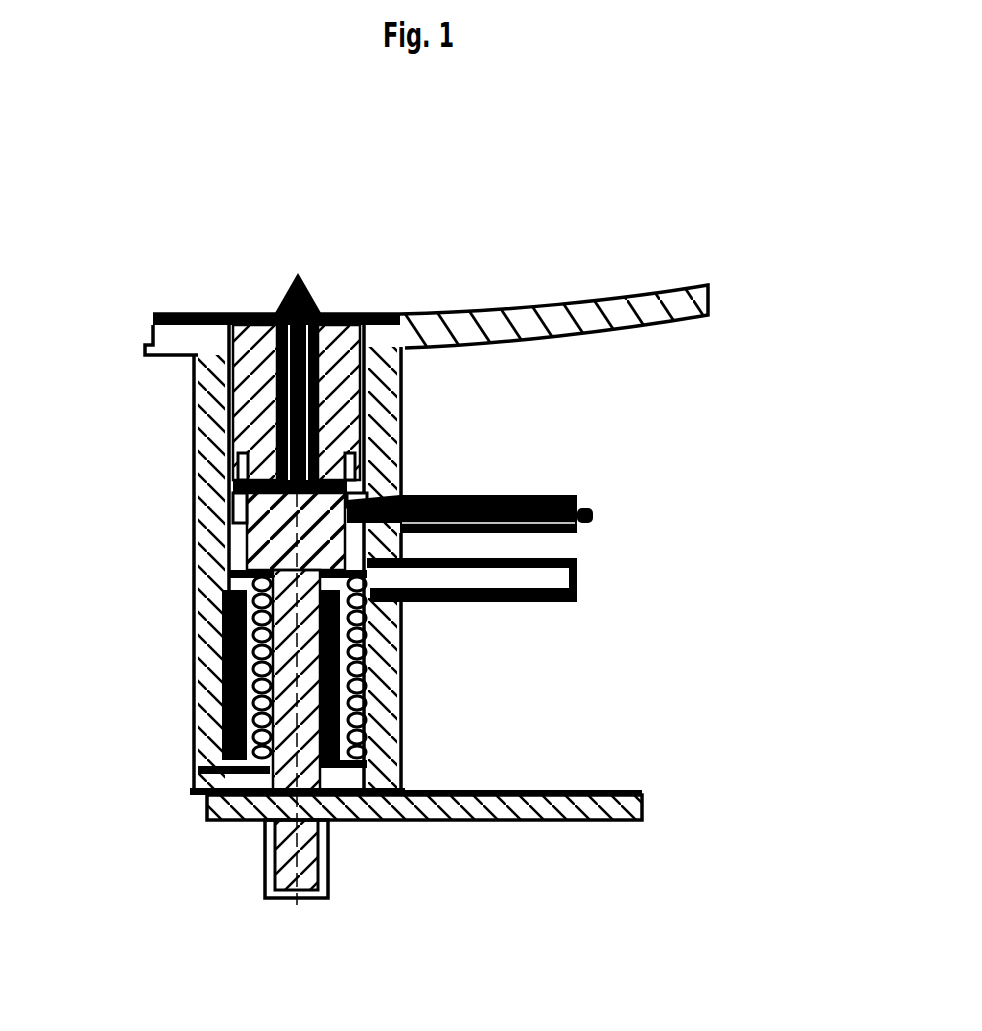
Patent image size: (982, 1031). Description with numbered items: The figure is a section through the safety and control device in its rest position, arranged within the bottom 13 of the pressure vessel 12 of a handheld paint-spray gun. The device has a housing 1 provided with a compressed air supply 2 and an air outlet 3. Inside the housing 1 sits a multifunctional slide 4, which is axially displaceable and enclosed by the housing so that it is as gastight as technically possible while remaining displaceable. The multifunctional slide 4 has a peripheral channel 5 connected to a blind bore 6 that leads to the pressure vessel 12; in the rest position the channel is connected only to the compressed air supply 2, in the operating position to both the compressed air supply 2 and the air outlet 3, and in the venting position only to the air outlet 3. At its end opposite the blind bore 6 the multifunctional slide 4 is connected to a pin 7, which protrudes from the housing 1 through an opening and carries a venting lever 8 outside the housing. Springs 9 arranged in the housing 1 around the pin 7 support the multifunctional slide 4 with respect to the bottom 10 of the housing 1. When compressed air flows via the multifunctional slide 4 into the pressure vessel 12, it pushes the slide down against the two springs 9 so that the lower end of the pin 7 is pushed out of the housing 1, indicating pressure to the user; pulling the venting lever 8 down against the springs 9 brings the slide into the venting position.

The housing 1 is at (402, 406).
The compressed air supply 2 is at (590, 520).
The air outlet 3 is at (543, 603).
The multifunctional slide 4 is at (330, 357).
The peripheral channel 5 is at (355, 475).
The blind bore 6 is at (284, 348).
The pin 7 is at (327, 870).
The venting lever 8 is at (528, 823).
The springs 9 is at (190, 663).
The bottom of the housing 10 is at (192, 769).
The pressure vessel 12 is at (298, 262).
The bottom of the pressure vessel 13 is at (710, 295).